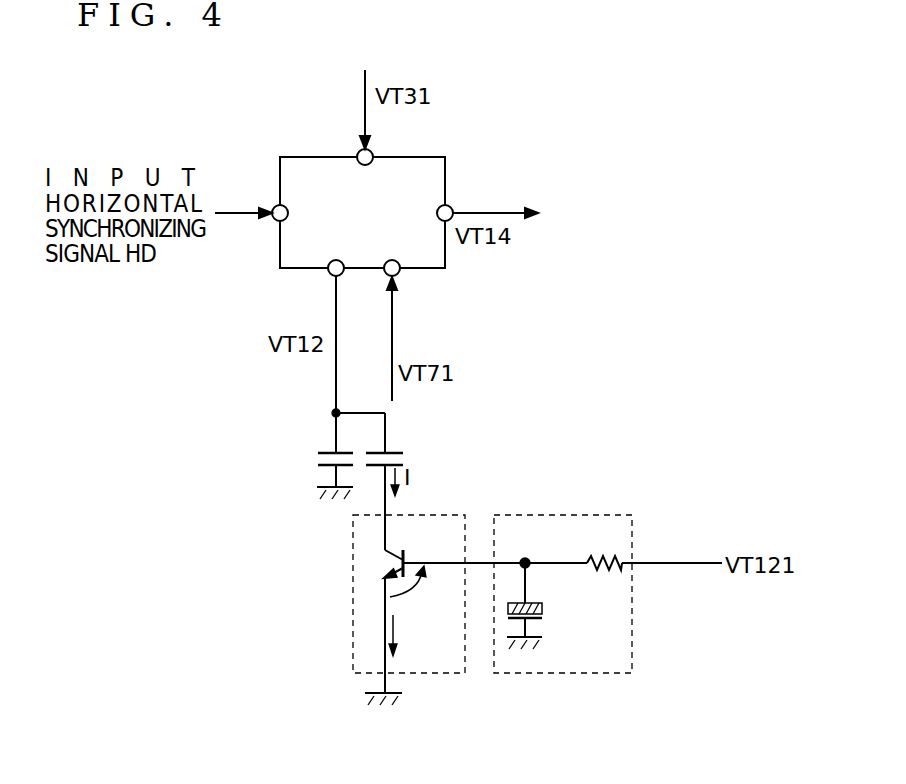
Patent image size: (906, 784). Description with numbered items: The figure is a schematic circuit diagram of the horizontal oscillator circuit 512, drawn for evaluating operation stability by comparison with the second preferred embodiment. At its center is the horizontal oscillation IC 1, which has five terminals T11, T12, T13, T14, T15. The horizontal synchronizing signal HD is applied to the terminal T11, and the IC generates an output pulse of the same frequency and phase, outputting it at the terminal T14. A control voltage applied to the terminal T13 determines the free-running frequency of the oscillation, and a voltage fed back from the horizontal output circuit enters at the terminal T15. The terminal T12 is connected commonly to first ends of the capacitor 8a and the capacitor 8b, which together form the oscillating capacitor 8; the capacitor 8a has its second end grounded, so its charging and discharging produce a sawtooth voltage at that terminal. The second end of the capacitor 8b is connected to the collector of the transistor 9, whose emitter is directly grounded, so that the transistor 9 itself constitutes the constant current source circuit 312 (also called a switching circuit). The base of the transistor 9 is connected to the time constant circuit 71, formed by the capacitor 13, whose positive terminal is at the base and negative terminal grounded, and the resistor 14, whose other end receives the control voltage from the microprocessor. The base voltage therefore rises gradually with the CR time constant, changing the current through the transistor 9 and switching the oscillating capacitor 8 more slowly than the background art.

The horizontal oscillator circuit 512 is at (283, 129).
The horizontal oscillation IC 1 is at (326, 154).
The terminal T11 is at (275, 221).
The terminal T12 is at (332, 276).
The terminal T13 is at (399, 276).
The terminal T14 is at (452, 207).
The terminal T15 is at (373, 151).
The oscillating capacitor 8 is at (322, 414).
The first capacitor 8a is at (317, 456).
The second capacitor 8b is at (418, 445).
The bipolar transistor 9 is at (405, 556).
The constant current source circuit 312 is at (410, 617).
The time constant circuit 71 is at (563, 619).
The capacitor 13 is at (543, 608).
The resistor 14 is at (607, 556).